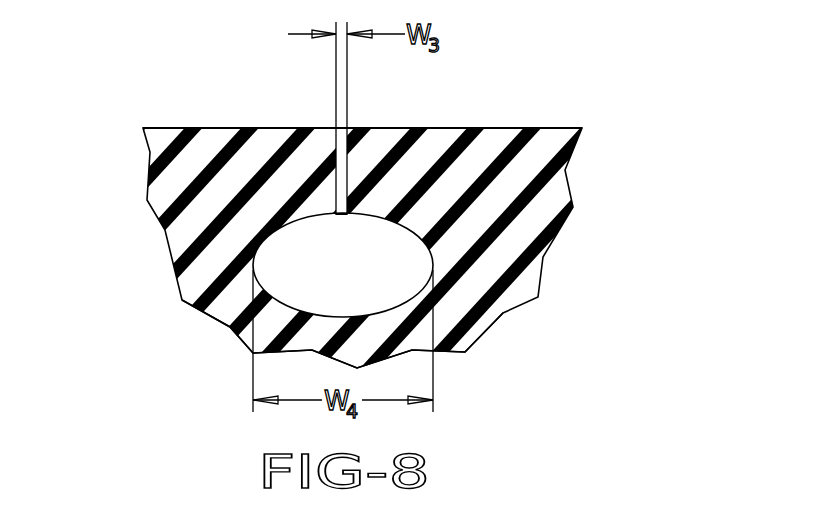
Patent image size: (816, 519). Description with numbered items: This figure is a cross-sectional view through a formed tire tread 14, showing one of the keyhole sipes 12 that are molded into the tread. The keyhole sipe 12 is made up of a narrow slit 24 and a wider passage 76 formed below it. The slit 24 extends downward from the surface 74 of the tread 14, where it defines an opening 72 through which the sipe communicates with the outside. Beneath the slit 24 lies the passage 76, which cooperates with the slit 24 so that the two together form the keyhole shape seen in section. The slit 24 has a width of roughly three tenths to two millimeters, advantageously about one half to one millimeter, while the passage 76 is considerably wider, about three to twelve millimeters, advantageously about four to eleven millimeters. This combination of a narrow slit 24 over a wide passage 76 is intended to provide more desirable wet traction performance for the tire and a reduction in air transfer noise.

The keyhole sipe 12 is at (268, 312).
The tread 14 is at (172, 187).
The slit 24 is at (360, 165).
The opening 72 is at (340, 121).
The surface 74 is at (510, 128).
The passage 76 is at (356, 280).